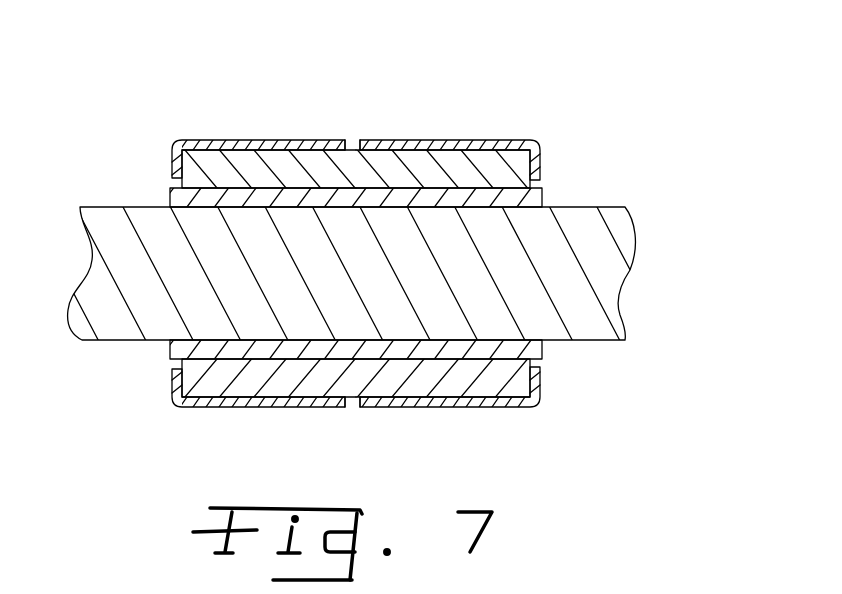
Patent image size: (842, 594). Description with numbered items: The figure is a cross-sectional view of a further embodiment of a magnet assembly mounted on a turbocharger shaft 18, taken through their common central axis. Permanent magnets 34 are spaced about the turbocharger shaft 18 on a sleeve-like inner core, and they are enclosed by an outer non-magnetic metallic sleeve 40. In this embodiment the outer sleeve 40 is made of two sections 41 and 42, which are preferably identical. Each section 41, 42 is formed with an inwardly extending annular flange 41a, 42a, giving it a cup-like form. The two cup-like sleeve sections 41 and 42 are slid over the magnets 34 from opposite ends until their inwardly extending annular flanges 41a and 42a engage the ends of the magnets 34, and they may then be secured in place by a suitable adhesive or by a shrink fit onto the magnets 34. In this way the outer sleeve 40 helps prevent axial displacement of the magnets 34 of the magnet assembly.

The turbocharger shaft 18 is at (562, 332).
The permanent magnets 34 is at (533, 176).
The outer non-magnetic metallic sleeve 40 is at (365, 117).
The sleeve section 41 is at (270, 143).
The inwardly extending annular flange 41a is at (172, 162).
The sleeve section 42 is at (452, 138).
The inwardly extending annular flange 42a is at (542, 160).